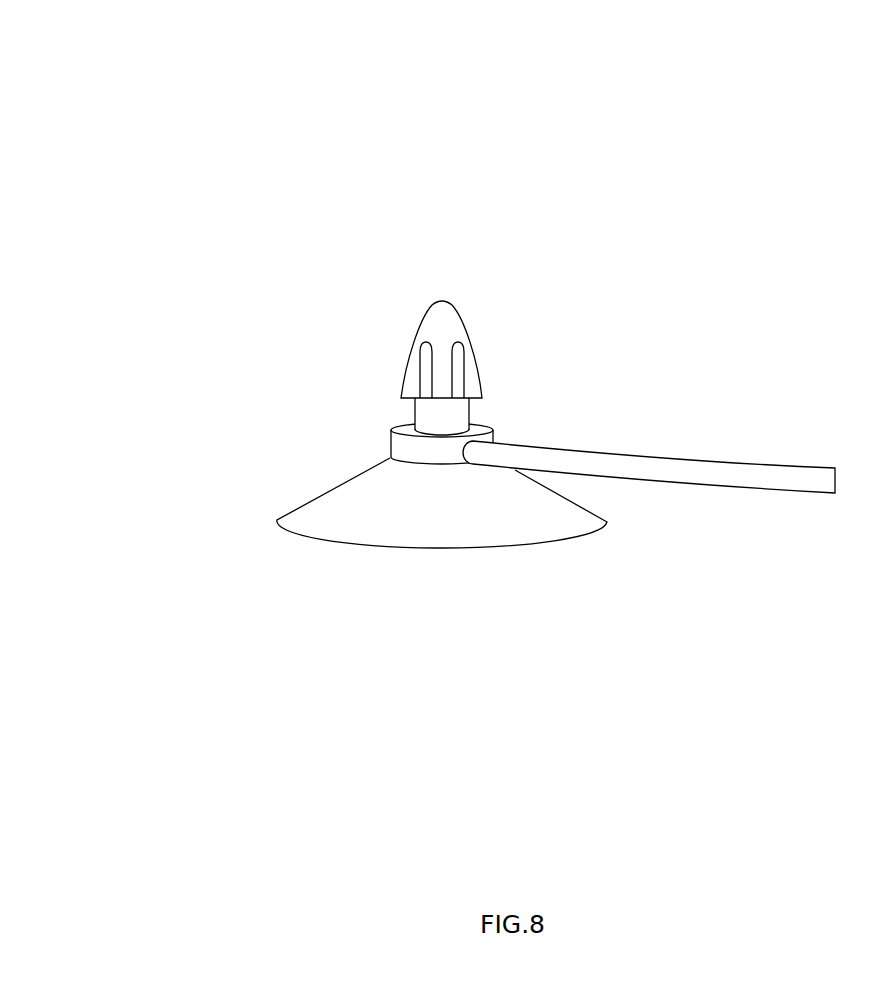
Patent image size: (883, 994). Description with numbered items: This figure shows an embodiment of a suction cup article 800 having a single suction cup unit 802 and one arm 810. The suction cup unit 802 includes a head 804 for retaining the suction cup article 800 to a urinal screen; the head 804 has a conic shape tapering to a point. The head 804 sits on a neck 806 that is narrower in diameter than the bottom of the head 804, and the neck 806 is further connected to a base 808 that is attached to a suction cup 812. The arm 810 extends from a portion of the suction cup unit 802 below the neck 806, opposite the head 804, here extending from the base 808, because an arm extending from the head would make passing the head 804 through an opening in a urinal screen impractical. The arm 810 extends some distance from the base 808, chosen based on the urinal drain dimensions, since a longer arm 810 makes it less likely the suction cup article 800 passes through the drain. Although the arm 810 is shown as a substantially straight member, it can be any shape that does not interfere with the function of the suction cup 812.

The suction cup article 800 is at (74, 36).
The suction cup unit 802 is at (530, 377).
The head 804 is at (428, 322).
The neck 806 is at (415, 412).
The base 808 is at (400, 449).
The arm 810 is at (718, 461).
The suction cup 812 is at (426, 512).